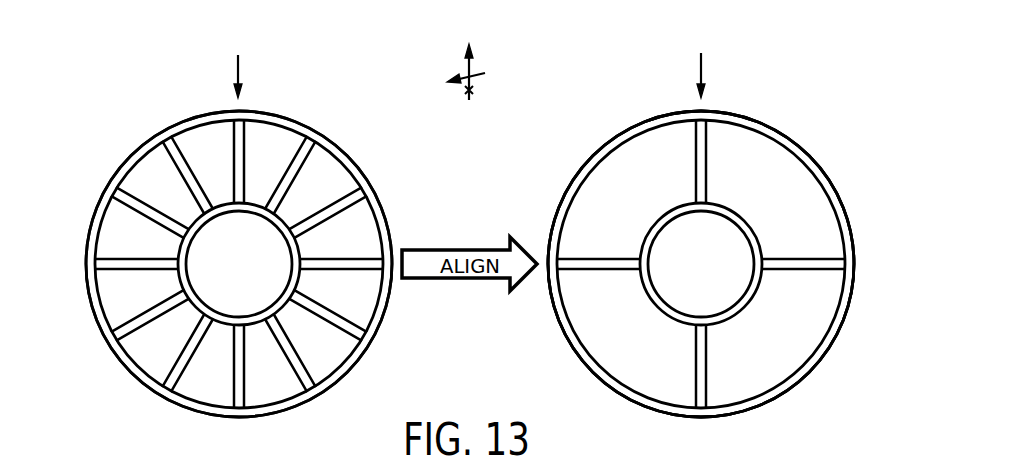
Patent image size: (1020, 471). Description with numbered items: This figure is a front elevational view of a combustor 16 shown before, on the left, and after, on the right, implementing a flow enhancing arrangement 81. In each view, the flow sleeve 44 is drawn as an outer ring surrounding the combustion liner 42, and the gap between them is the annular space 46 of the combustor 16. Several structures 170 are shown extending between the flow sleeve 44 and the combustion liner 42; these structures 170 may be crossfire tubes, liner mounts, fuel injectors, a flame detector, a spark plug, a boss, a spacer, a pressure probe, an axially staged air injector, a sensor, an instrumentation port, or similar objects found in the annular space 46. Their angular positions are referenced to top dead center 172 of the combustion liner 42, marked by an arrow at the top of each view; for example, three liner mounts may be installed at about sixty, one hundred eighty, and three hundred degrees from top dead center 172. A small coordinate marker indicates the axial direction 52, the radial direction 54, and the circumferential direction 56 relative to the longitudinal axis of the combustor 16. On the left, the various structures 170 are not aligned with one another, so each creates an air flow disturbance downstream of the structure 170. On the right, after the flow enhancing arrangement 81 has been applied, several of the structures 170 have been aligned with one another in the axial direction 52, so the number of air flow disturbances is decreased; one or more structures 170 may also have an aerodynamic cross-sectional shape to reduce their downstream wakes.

The combustor 16 is at (357, 144).
The combustion liner 42 is at (203, 226).
The flow sleeve 44 is at (134, 157).
The annular space 46 is at (270, 153).
The axial direction 52 is at (469, 99).
The radial direction 54 is at (470, 68).
The circumferential direction 56 is at (477, 76).
The flow enhancing arrangement 81 is at (658, 43).
The structures 170 is at (135, 270).
The top dead center 172 is at (236, 71).